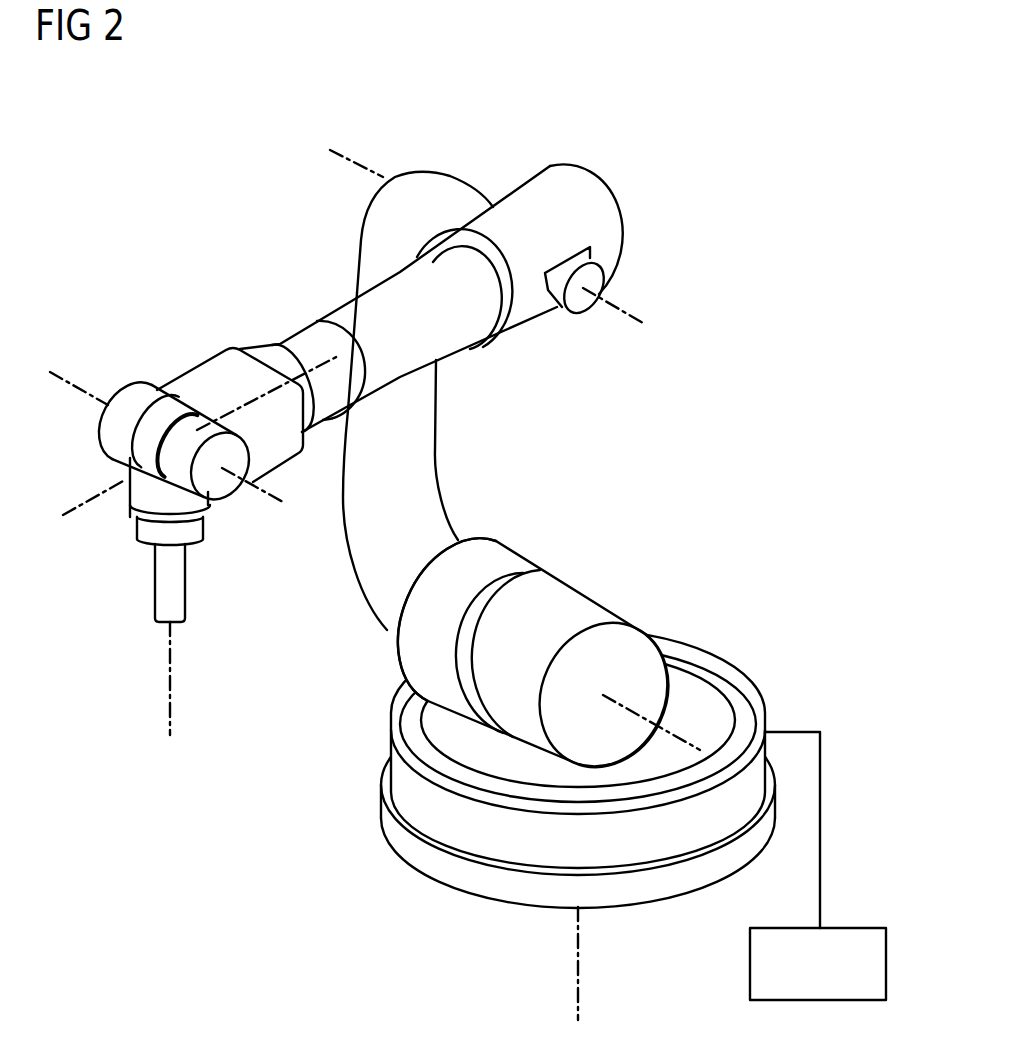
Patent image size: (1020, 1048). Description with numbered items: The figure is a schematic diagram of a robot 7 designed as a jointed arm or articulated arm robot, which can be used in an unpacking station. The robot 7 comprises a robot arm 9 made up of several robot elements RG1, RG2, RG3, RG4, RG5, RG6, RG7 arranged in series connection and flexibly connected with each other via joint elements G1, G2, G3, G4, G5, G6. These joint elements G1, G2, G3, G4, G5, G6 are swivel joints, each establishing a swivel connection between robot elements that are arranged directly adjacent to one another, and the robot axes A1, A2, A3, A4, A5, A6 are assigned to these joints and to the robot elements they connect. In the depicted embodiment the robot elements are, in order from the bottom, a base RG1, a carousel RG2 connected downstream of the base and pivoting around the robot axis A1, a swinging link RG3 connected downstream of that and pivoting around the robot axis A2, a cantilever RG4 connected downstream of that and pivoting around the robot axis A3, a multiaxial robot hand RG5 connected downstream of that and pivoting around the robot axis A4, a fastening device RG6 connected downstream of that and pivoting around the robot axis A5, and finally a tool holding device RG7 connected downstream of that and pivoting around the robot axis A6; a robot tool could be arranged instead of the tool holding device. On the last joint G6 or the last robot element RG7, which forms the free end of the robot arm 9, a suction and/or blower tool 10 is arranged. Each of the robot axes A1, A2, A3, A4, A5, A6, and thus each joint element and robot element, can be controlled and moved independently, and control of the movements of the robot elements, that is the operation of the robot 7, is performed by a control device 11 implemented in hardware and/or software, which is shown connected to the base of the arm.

The robot 7 is at (656, 188).
The robot arm 9 is at (460, 544).
The suction and/or blower tool 10 is at (153, 578).
The control device 11 is at (852, 925).
The robot axis A1 is at (578, 1000).
The robot axis A2 is at (690, 740).
The robot axis A3 is at (341, 150).
The robot axis A4 is at (280, 384).
The robot axis A5 is at (65, 373).
The robot axis A6 is at (170, 673).
The joint element G1 is at (667, 780).
The joint element G2 is at (410, 653).
The joint element G3 is at (448, 192).
The joint element G4 is at (325, 347).
The joint element G5 is at (120, 427).
The joint element G6 is at (140, 515).
The base RG1 is at (420, 812).
The carousel RG2 is at (597, 602).
The swinging link RG3 is at (420, 458).
The cantilever RG4 is at (430, 335).
The multiaxial robot hand RG5 is at (203, 377).
The fastening device RG6 is at (190, 497).
The tool holding device RG7 is at (187, 533).